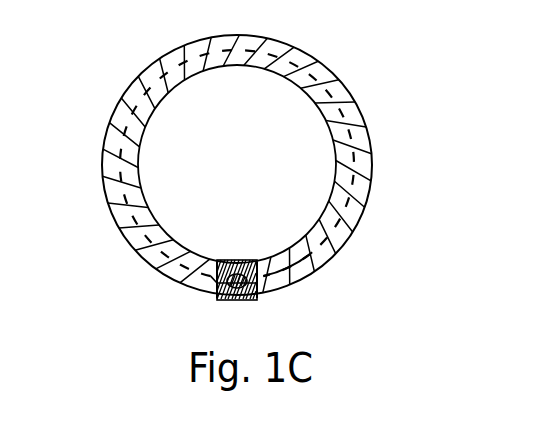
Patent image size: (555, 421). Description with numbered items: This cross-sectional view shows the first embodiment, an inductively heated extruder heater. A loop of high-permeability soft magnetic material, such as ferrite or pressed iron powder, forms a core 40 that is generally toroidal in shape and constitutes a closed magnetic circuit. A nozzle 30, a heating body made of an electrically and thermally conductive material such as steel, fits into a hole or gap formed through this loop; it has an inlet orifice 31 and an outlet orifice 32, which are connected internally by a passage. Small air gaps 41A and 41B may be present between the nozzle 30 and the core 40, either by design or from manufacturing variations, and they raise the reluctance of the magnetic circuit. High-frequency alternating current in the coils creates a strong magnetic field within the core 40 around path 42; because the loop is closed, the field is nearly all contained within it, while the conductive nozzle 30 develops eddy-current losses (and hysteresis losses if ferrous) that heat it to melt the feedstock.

The core 40 is at (108, 217).
The path 42 is at (147, 92).
The nozzle 30 is at (258, 295).
The inlet orifice 31 is at (236, 281).
The outlet orifice 32 is at (216, 291).
The air gap 41A is at (218, 262).
The air gap 41B is at (258, 262).